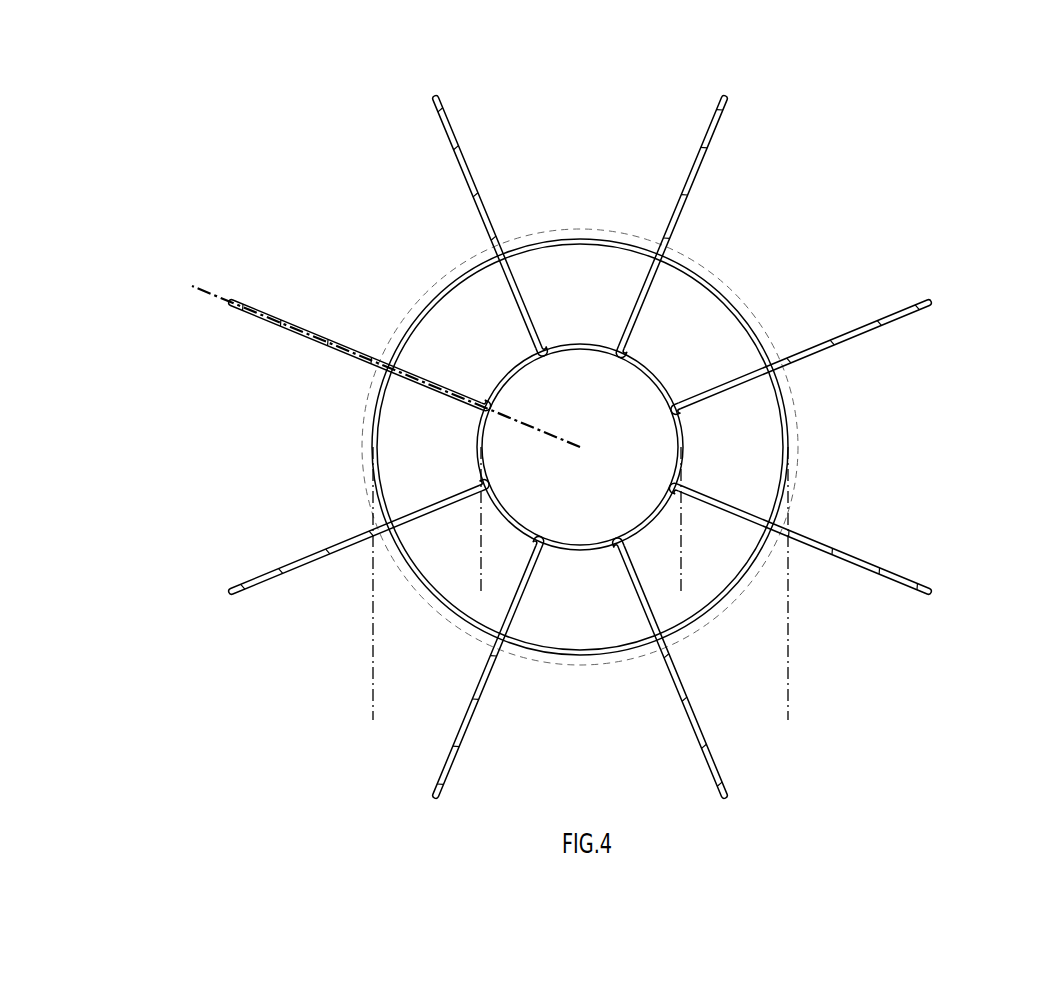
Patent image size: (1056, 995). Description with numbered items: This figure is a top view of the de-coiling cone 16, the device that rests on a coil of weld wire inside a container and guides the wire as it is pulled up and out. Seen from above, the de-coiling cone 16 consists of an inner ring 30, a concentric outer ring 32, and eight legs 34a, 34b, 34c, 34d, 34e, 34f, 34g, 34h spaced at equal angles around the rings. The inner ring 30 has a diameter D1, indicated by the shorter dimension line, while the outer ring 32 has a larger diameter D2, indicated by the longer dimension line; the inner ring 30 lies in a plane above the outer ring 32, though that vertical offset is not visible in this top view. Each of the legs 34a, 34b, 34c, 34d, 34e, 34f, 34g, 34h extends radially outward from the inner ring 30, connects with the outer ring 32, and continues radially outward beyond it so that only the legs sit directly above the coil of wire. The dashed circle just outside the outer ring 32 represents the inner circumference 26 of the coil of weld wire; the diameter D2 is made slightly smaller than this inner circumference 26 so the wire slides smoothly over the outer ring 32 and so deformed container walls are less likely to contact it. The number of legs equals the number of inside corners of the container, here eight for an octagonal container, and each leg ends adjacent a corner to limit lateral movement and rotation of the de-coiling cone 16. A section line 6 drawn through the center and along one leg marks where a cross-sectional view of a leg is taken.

The de-coiling cone 16 is at (886, 170).
The inner circumference 26 is at (757, 312).
The inner ring 30 is at (684, 448).
The outer ring 32 is at (795, 432).
The leg 34a is at (219, 598).
The leg 34b is at (434, 809).
The leg 34c is at (729, 810).
The leg 34d is at (939, 599).
The leg 34e is at (944, 297).
The leg 34f is at (713, 84).
The leg 34g is at (425, 82).
The leg 34h is at (223, 318).
The section line 6 is at (192, 286).
The diameter of inner ring D1 is at (681, 582).
The diameter of outer ring D2 is at (788, 703).